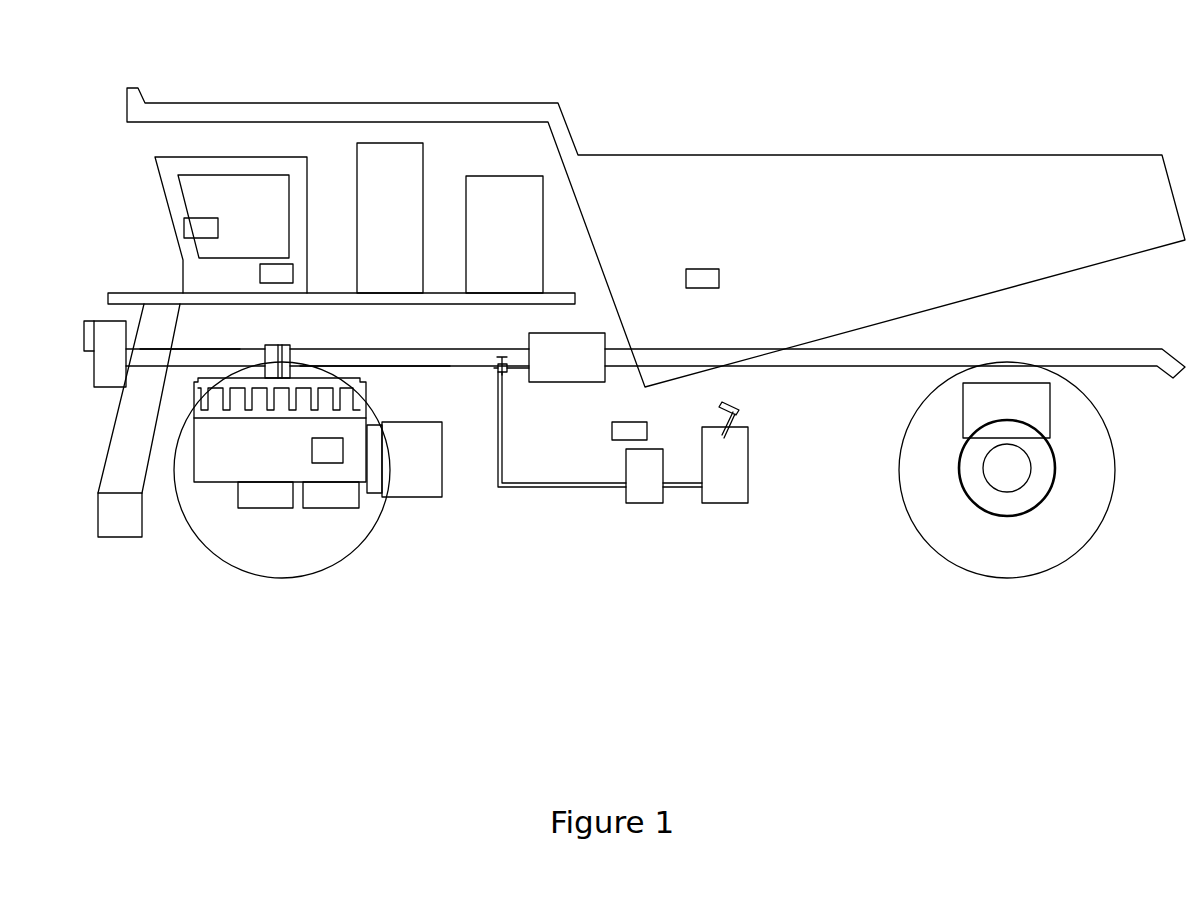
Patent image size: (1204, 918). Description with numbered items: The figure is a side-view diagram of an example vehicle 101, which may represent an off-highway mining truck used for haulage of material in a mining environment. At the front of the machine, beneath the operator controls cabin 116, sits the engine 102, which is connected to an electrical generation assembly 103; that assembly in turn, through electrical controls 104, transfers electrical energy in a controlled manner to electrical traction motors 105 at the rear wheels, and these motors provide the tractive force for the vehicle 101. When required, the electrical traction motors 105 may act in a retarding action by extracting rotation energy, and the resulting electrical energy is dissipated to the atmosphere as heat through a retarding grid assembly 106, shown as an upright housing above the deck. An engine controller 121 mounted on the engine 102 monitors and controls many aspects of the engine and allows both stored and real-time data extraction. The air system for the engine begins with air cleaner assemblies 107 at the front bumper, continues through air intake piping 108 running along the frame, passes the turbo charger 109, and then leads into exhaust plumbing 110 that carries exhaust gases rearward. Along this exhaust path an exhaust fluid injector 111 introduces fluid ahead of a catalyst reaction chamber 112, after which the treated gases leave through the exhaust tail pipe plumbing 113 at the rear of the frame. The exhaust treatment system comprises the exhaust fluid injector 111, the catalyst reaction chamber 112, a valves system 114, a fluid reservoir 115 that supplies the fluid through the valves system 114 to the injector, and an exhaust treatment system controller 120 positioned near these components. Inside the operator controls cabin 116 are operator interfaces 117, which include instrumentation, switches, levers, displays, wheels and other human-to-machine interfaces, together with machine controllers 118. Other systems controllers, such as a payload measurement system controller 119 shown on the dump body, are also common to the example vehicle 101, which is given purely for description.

The vehicle 101 is at (468, 715).
The engine 102 is at (222, 472).
The electrical generation assembly 103 is at (422, 430).
The electrical controls 104 is at (391, 163).
The electrical traction motors 105 is at (1012, 503).
The retarding grid assembly 106 is at (504, 190).
The air cleaner assemblies 107 is at (100, 330).
The air intake piping 108 is at (204, 360).
The turbo charger 109 is at (271, 352).
The exhaust plumbing 110 is at (377, 355).
The exhaust fluid injector 111 is at (498, 357).
The catalyst reaction chamber 112 is at (584, 375).
The exhaust tail pipe plumbing 113 is at (1115, 357).
The valves system 114 is at (647, 500).
The fluid reservoir 115 is at (734, 500).
The operator controls cabin 116 is at (221, 163).
The operator interfaces 117 is at (197, 225).
The machine controllers 118 is at (273, 272).
The payload measurement system controller 119 is at (698, 275).
The exhaust treatment system controller 120 is at (624, 428).
The engine controller 121 is at (325, 452).